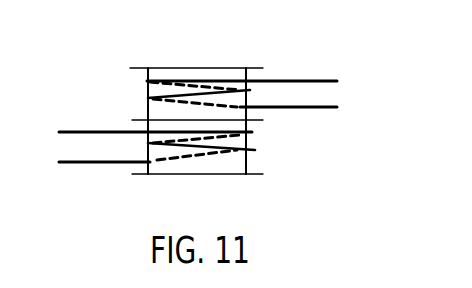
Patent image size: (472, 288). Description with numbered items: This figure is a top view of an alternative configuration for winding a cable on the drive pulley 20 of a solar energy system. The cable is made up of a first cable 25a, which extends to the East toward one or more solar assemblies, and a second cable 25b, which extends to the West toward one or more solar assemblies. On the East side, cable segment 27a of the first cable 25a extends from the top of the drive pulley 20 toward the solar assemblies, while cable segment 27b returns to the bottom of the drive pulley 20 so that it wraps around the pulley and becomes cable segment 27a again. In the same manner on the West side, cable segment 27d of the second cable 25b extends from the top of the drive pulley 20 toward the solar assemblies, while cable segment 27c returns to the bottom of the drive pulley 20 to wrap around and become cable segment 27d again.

The drive pulley 20 is at (210, 67).
The first cable 25a is at (278, 79).
The second cable 25b is at (100, 164).
The cable segment 27a is at (327, 79).
The cable segment 27b is at (310, 110).
The cable segment 27c is at (80, 164).
The cable segment 27d is at (90, 130).